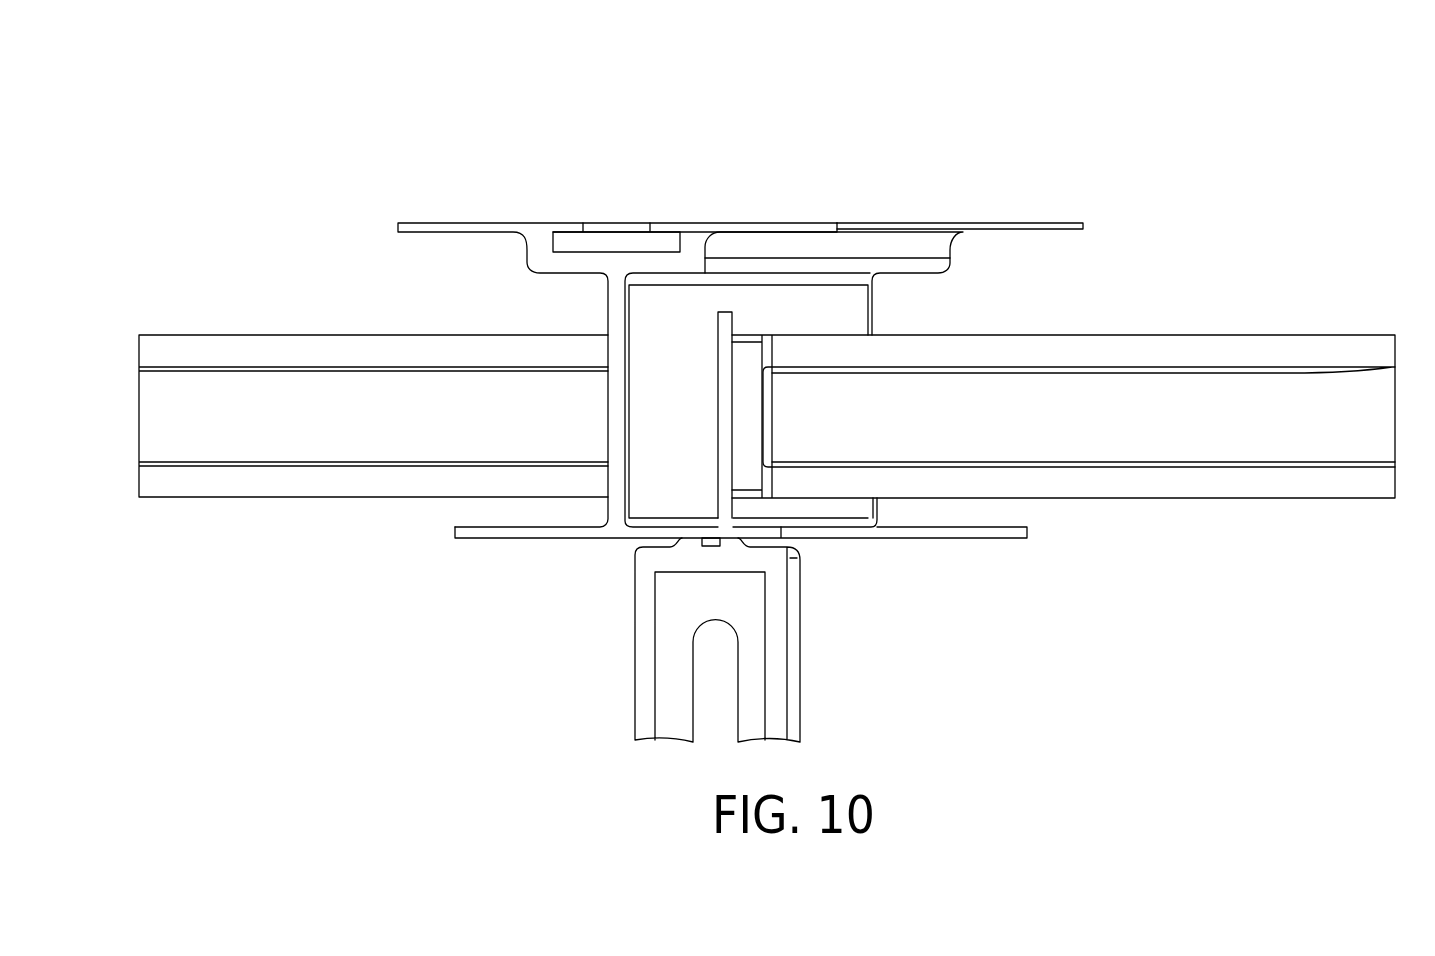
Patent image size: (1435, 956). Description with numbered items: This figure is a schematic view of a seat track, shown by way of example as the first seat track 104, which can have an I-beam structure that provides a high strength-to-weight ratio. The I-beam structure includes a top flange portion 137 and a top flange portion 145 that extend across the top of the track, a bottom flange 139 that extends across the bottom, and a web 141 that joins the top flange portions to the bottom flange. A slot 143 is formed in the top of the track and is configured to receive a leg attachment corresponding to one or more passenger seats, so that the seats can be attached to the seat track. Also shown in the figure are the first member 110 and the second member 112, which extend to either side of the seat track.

The first seat track 104 is at (476, 105).
The first member 110 is at (358, 483).
The second member 112 is at (1118, 480).
The top flange portion 137 is at (1042, 223).
The bottom flange 139 is at (972, 528).
The web 141 is at (620, 318).
The slot 143 is at (625, 220).
The top flange portion 145 is at (435, 223).